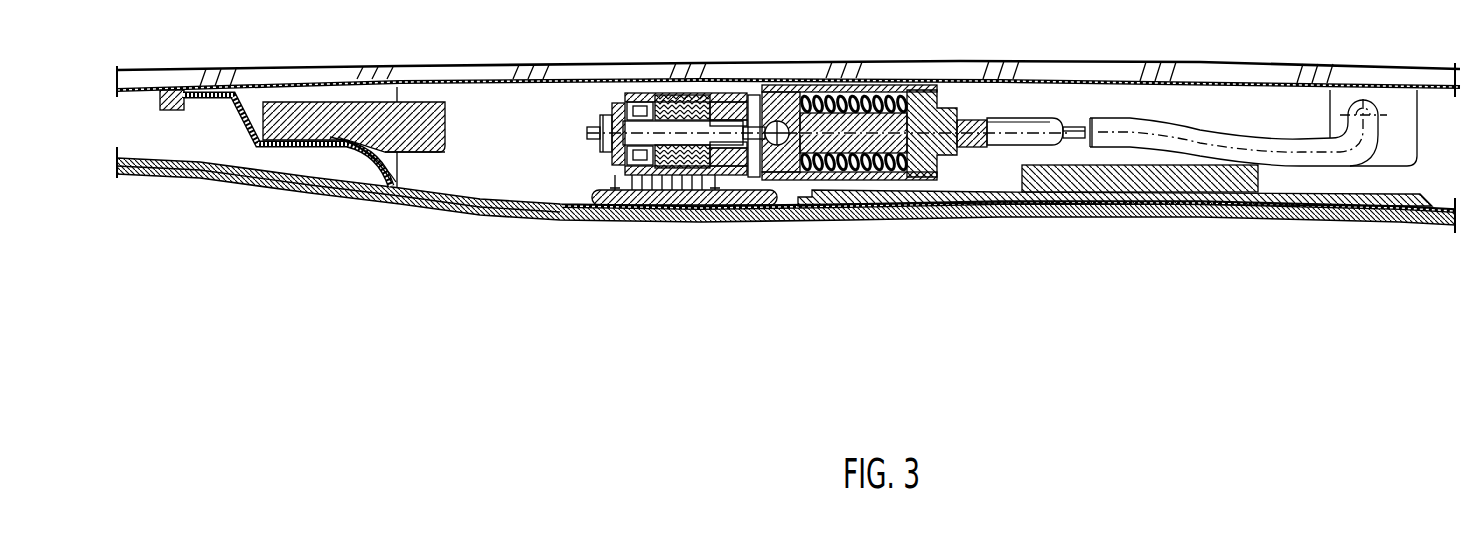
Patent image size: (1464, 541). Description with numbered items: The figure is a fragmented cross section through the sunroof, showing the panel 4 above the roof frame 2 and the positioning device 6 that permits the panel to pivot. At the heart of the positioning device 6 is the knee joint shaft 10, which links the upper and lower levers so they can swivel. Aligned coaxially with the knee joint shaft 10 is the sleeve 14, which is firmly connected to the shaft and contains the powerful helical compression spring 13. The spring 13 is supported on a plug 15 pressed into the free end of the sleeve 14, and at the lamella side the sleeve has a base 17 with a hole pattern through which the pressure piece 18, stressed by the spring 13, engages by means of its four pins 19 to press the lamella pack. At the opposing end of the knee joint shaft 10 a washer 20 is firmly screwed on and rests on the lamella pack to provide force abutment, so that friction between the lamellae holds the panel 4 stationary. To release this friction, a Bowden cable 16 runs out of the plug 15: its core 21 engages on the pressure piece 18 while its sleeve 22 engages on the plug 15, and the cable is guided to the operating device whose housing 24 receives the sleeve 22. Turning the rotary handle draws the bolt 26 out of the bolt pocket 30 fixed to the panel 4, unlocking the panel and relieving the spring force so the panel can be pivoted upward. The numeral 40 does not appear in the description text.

The roof frame 2 is at (171, 160).
The panel 4 is at (480, 66).
The positioning device 6 is at (586, 189).
The knee joint shaft 10 is at (582, 128).
The helical compression spring 13 is at (890, 100).
The sleeve 14 is at (916, 182).
The plug 15 is at (957, 153).
The Bowden cable 16 is at (1229, 122).
The base 17 is at (747, 110).
The pressure piece 18 is at (787, 105).
The pins 19 is at (752, 95).
The washer 20 is at (618, 102).
The core 21 is at (1076, 126).
The sleeve 22 is at (974, 124).
The housing 24 is at (1397, 135).
The bolt 26 is at (435, 125).
The bolt pocket 30 is at (349, 160).
The foot 40 is at (441, 158).